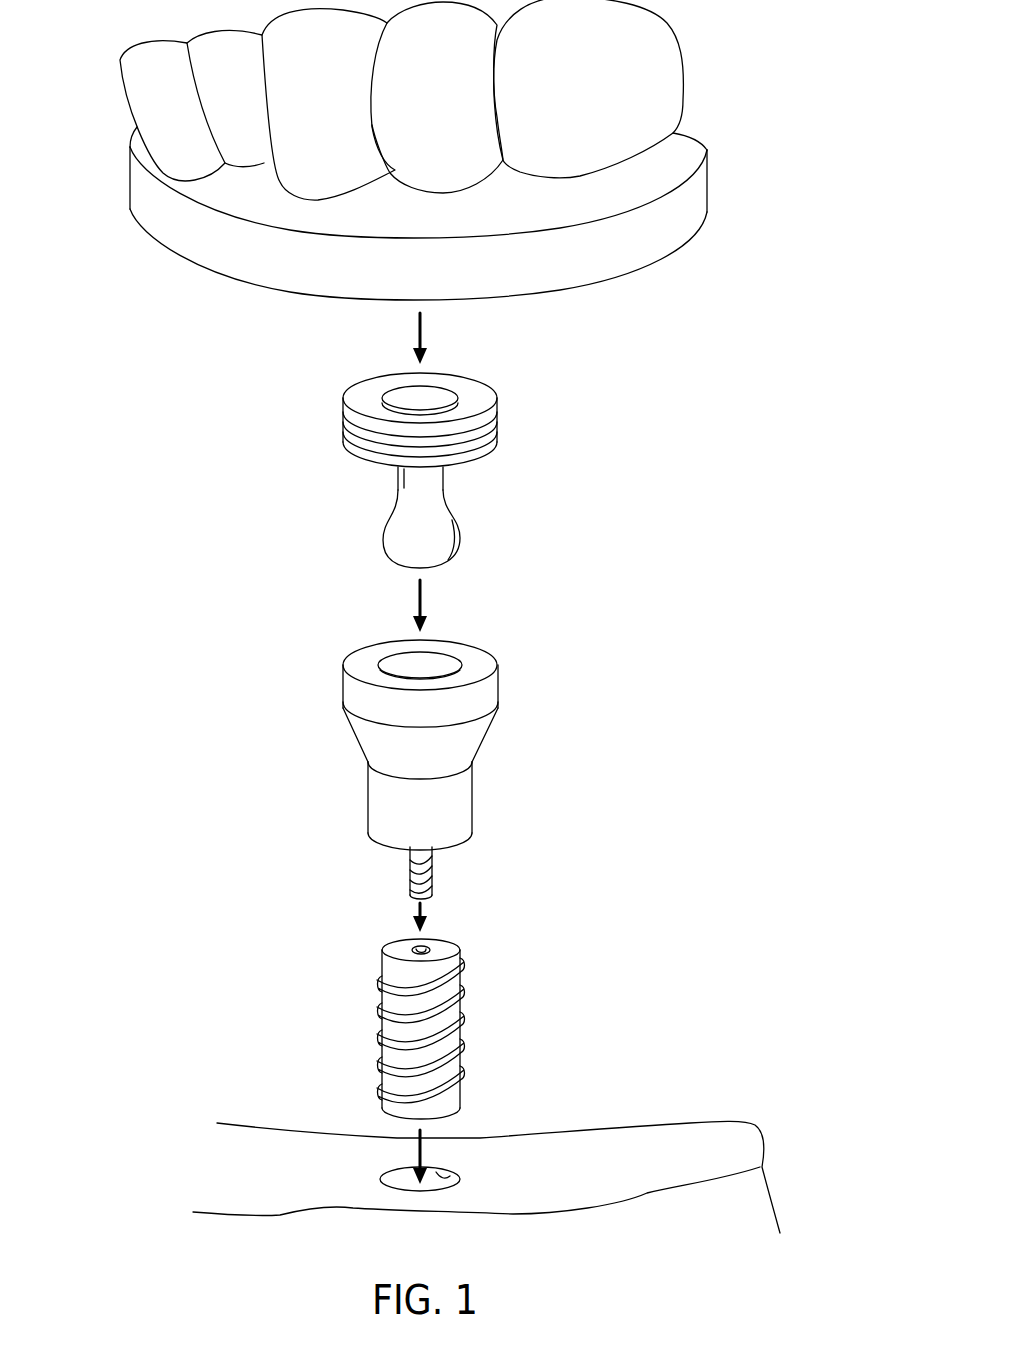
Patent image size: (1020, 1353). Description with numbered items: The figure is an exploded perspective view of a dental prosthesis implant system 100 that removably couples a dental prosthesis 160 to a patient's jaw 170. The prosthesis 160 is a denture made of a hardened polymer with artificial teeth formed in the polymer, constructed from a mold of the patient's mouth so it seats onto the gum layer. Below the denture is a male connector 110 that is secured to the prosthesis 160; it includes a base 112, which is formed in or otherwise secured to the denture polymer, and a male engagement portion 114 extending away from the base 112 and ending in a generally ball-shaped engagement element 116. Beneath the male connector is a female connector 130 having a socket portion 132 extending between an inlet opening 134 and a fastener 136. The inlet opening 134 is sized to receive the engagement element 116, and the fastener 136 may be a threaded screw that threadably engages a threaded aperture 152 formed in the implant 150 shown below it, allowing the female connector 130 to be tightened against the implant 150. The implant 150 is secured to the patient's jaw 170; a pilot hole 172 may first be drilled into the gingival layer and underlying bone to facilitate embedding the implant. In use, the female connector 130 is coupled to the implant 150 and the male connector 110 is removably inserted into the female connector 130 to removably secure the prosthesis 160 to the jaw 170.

The dental prosthesis implant system 100 is at (150, 377).
The male connector 110 is at (428, 470).
The base 112 is at (343, 413).
The male engagement portion 114 is at (417, 517).
The engagement element 116 is at (404, 546).
The female connector 130 is at (409, 742).
The socket portion 132 is at (350, 690).
The inlet opening 134 is at (432, 657).
The fastener 136 is at (408, 875).
The implant 150 is at (459, 1007).
The threaded aperture 152 is at (426, 951).
The dental prosthesis 160 is at (648, 285).
The jaw 170 is at (486, 1153).
The hole 172 is at (445, 1178).